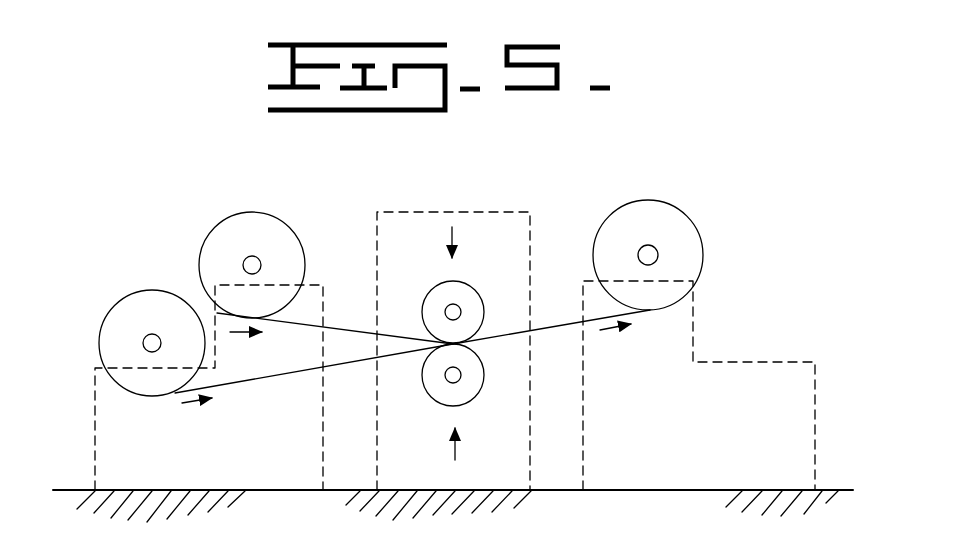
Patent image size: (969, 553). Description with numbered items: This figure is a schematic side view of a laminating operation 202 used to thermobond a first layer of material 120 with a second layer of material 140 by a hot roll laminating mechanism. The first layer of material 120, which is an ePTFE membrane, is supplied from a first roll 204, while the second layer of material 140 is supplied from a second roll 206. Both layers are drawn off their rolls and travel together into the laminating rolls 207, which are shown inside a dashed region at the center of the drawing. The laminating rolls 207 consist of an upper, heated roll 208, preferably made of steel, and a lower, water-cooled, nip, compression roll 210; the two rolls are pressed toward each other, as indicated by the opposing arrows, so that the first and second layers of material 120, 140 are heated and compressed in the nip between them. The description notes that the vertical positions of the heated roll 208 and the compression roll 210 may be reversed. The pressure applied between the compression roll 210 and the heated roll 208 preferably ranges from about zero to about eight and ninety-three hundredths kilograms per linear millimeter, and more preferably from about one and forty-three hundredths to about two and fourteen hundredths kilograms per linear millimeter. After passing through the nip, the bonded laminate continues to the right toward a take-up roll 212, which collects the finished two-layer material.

The first layer of material 120 is at (307, 370).
The second layer of material 140 is at (295, 325).
The laminating operation 202 is at (612, 160).
The first roll 204 is at (132, 293).
The second roll 206 is at (228, 213).
The laminating rolls 207 is at (504, 252).
The upper, heated roll 208 is at (428, 287).
The lower, water-cooled, nip, compression roll 210 is at (430, 400).
The rewind roll 212 is at (642, 203).